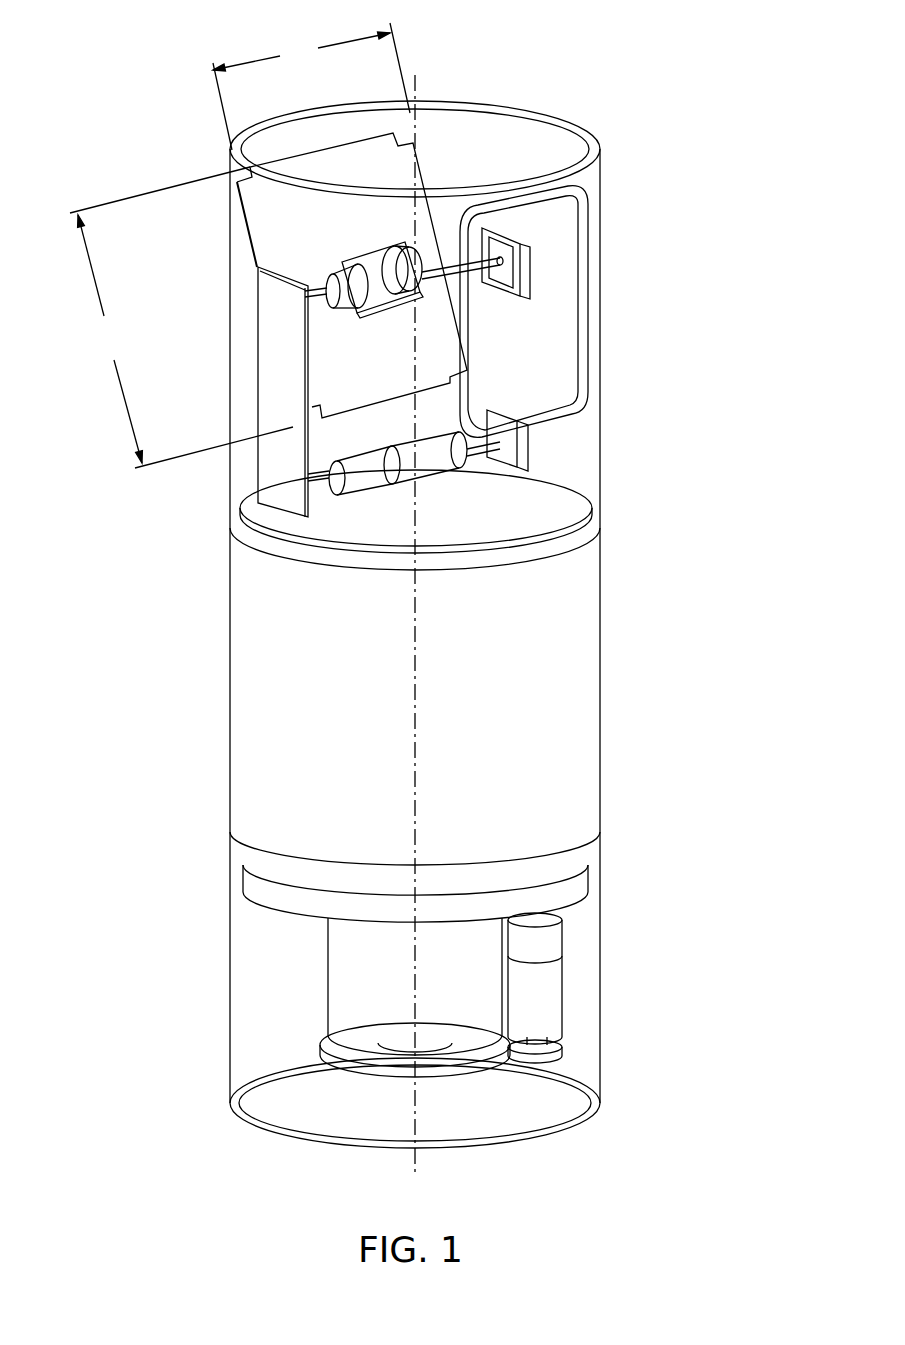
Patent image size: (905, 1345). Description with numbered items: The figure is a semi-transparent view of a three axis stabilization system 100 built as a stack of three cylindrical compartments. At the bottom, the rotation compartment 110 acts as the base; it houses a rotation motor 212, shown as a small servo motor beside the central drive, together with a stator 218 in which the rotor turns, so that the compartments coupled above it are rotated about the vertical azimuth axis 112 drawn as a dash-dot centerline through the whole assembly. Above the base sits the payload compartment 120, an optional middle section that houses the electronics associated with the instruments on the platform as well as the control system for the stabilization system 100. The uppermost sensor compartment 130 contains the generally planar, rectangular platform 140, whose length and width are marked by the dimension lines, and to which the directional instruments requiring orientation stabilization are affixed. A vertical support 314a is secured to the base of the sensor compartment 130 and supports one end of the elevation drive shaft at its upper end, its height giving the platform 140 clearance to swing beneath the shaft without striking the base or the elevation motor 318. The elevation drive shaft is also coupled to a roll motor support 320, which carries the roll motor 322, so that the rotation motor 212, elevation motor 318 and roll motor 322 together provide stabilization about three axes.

The three axis stabilization system 100 is at (723, 153).
The rotation compartment 110 is at (602, 1017).
The azimuth axis 112 is at (413, 1100).
The payload compartment 120 is at (603, 692).
The sensor compartment 130 is at (600, 282).
The platform 140 is at (247, 230).
The rotation motor 212 is at (563, 947).
The stator 218 is at (537, 1056).
The vertical support 314a is at (260, 353).
The elevation motor 318 is at (432, 260).
The roll motor support 320 is at (387, 242).
The roll motor 322 is at (412, 300).